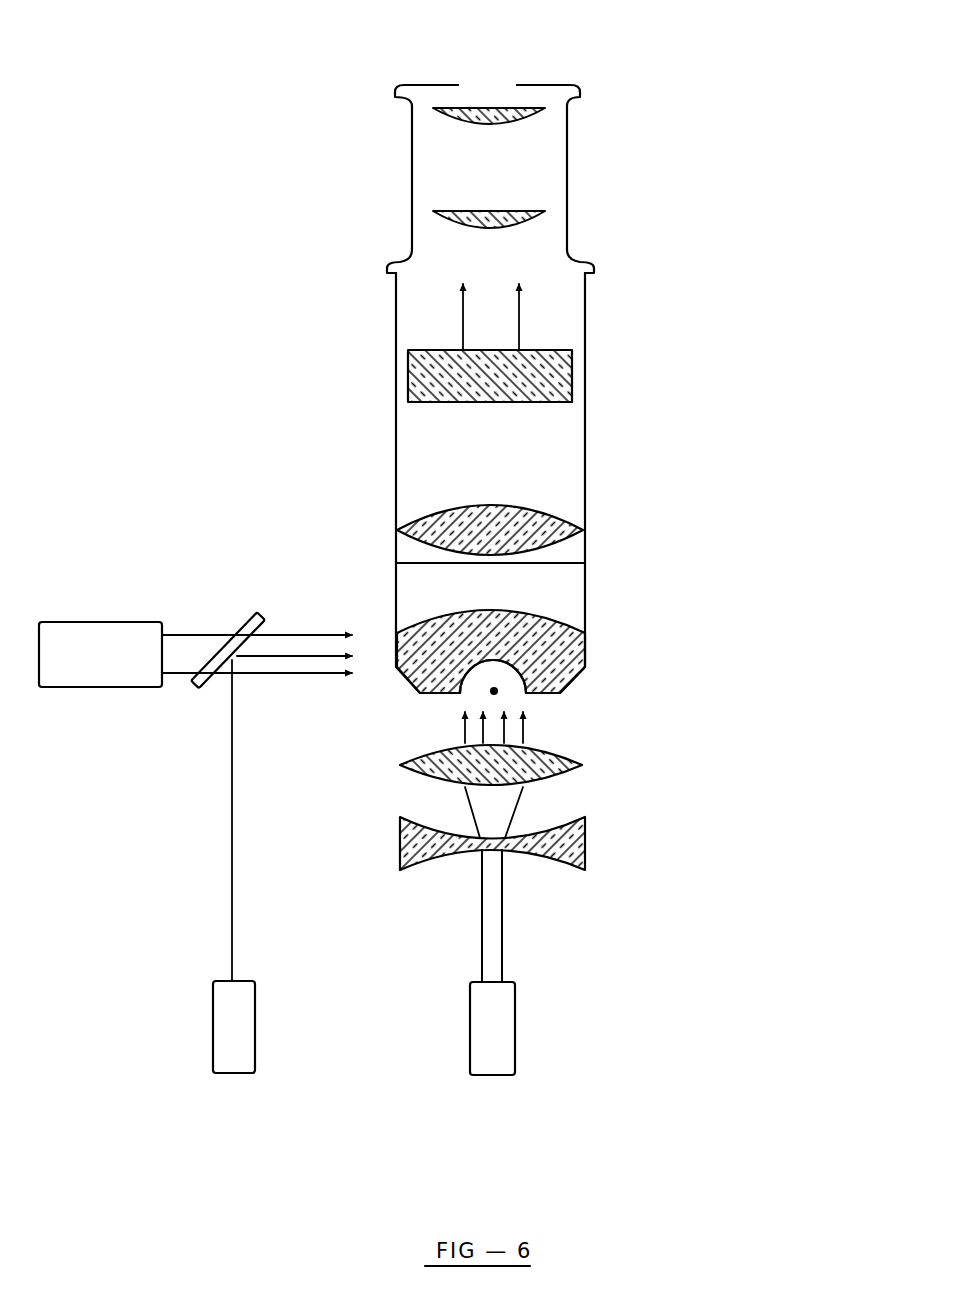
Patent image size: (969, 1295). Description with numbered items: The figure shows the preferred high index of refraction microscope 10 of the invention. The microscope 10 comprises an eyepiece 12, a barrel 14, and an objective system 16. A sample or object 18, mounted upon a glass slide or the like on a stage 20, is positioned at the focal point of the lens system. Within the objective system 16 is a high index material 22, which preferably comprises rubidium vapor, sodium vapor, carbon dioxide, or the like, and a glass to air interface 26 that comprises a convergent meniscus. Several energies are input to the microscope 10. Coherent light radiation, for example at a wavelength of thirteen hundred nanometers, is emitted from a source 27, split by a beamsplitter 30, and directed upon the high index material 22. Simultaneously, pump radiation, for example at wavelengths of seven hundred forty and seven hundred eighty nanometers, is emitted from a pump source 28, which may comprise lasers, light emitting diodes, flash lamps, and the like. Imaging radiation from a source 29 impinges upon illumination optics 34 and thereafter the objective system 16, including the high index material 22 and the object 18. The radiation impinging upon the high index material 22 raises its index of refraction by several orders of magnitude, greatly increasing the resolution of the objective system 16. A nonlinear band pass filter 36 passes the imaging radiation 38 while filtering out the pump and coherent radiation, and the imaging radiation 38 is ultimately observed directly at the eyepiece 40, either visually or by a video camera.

The microscope 10 is at (670, 104).
The eyepiece 12 is at (435, 148).
The barrel 14 is at (410, 198).
The objective system 16 is at (596, 683).
The sample or object 18 is at (522, 706).
The stage 20 is at (440, 693).
The high index material 22 is at (500, 696).
The glass to air interface 26 is at (430, 455).
The source 27 is at (232, 1015).
The pump source 28 is at (92, 622).
The imaging radiation source 29 is at (485, 1042).
The beamsplitter 30 is at (243, 625).
The illumination optics 34 is at (366, 802).
The nonlinear band pass filter 36 is at (587, 365).
The imaging radiation 38 is at (505, 925).
The eyepiece 40 is at (478, 78).